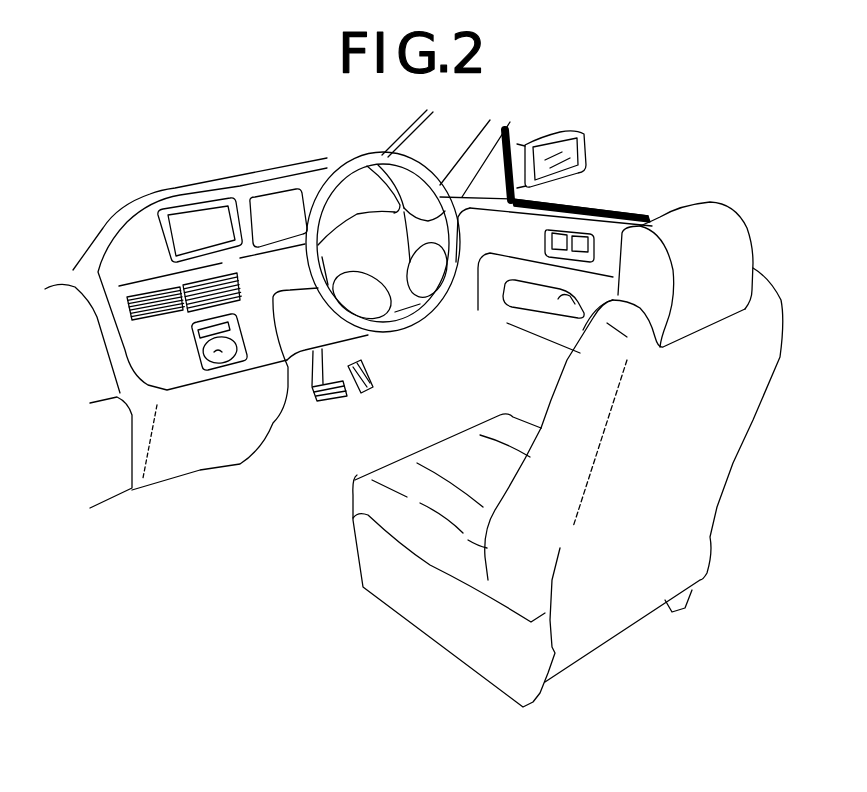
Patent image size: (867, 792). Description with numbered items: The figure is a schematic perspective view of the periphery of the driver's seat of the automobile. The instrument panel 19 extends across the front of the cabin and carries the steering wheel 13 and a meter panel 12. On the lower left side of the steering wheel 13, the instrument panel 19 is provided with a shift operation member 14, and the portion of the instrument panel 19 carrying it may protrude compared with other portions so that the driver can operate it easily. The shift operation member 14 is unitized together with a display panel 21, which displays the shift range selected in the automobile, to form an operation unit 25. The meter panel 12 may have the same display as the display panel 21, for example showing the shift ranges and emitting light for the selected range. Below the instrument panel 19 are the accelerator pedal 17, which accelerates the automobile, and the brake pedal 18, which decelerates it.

The meter panel 12 is at (278, 203).
The steering wheel 13 is at (357, 155).
The shift operation member 14 is at (220, 352).
The accelerator pedal 17 is at (376, 372).
The brake pedal 18 is at (337, 398).
The instrument panel 19 is at (117, 300).
The display panel 21 is at (193, 337).
The operation unit 25 is at (240, 367).